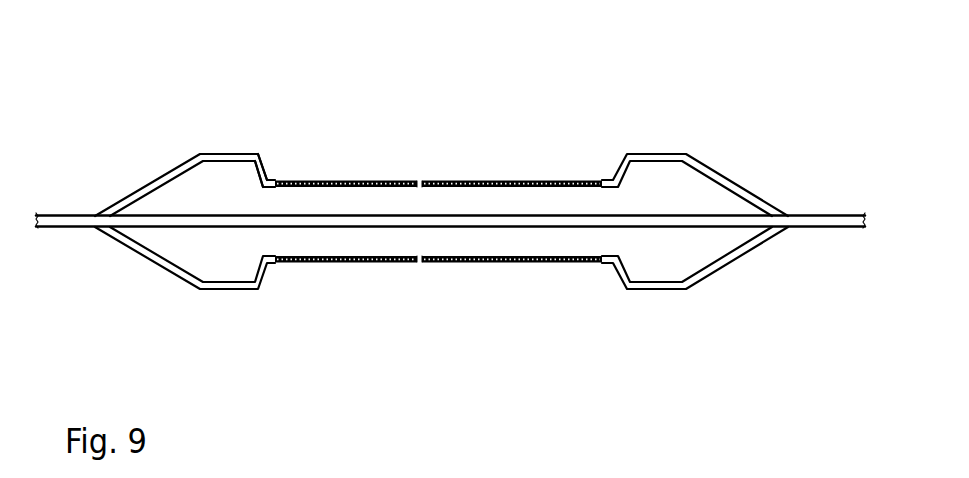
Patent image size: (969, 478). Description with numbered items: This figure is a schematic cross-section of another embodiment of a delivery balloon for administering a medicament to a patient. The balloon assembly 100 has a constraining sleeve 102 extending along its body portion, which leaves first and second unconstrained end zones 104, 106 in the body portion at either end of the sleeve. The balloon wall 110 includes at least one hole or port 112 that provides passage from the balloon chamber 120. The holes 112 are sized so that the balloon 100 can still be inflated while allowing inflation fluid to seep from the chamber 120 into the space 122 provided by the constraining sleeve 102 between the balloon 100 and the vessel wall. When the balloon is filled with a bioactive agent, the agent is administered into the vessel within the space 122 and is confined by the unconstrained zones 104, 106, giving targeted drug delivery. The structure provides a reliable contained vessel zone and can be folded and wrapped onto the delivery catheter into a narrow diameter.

The balloon assembly 100 is at (597, 103).
The constraining sleeve 102 is at (320, 265).
The first unconstrained end zone 104 is at (221, 157).
The second unconstrained end zone 106 is at (662, 291).
The balloon wall 110 is at (266, 170).
The hole or port 112 is at (417, 177).
The balloon chamber 120 is at (533, 233).
The space 122 is at (513, 180).